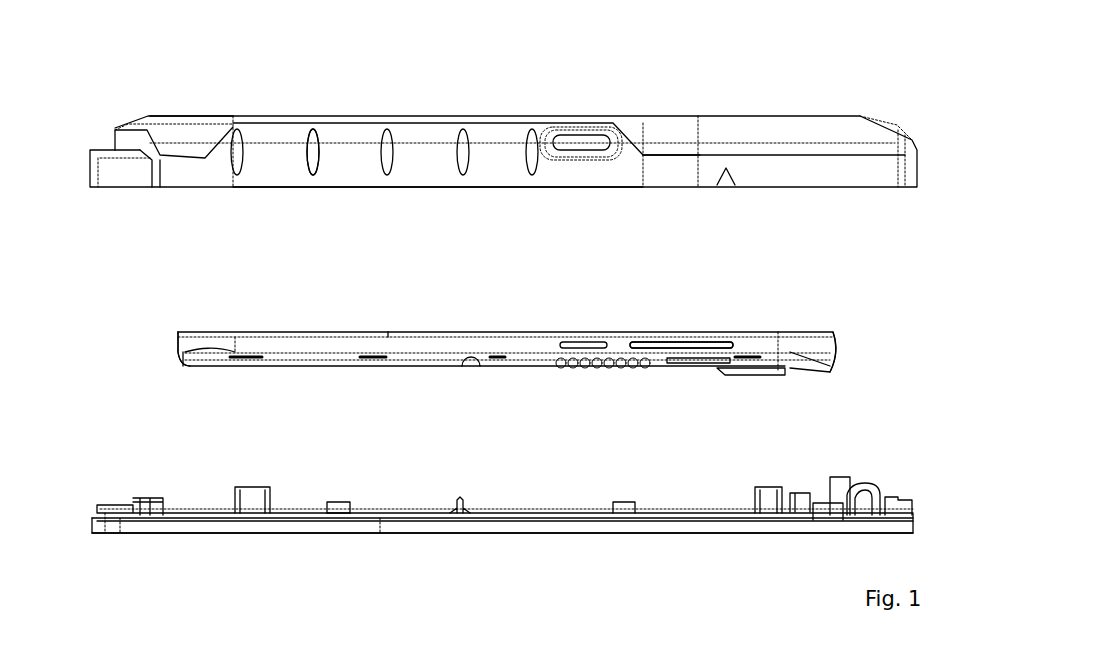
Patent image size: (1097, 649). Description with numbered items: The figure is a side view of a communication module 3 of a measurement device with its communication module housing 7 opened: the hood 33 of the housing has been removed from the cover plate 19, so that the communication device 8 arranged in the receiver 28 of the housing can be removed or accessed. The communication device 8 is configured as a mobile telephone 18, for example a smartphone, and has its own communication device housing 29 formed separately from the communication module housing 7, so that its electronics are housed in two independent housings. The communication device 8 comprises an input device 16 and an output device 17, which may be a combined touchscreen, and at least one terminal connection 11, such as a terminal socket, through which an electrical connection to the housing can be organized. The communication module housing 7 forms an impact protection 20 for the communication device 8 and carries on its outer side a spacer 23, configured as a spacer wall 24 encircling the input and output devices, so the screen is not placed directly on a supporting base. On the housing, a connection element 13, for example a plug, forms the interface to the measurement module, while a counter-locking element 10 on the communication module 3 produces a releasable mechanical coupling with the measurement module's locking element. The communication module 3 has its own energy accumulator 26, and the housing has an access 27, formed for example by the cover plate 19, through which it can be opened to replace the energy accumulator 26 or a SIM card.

The communication module 3 is at (872, 72).
The communication module housing 7 is at (118, 116).
The connection element 13 is at (120, 166).
The impact protection 20 is at (230, 110).
The spacer 23 is at (500, 117).
The spacer wall 24 is at (313, 152).
The receiver 28 is at (488, 198).
The hood 33 is at (665, 165).
The communication device 8 is at (155, 350).
The mobile telephone 18 is at (184, 349).
The input device 16 is at (388, 332).
The output device 17 is at (681, 345).
The communication device housing 29 is at (192, 349).
The terminal connection 11 is at (840, 350).
The energy accumulator 26 is at (496, 398).
The cover plate 19 is at (120, 490).
The counter-locking element 10 is at (335, 515).
The access 27 is at (494, 550).